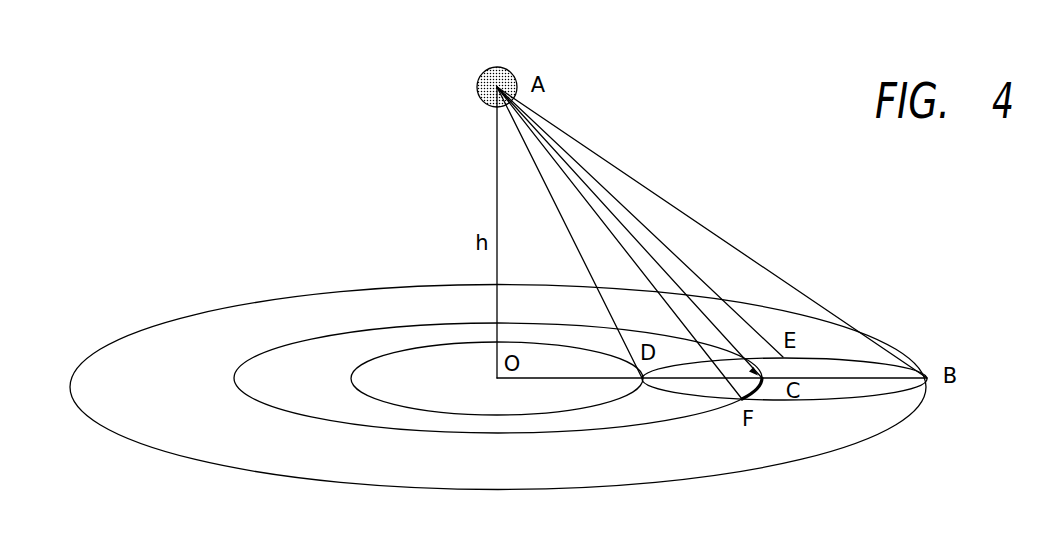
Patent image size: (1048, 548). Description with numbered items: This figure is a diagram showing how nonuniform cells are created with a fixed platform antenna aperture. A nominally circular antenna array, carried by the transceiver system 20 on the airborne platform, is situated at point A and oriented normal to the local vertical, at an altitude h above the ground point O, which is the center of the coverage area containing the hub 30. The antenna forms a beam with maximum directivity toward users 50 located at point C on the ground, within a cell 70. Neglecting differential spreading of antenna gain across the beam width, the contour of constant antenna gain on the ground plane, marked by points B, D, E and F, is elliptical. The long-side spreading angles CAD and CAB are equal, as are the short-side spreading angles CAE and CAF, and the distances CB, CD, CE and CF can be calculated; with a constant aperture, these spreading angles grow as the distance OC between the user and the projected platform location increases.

The transceiver system 20 is at (478, 83).
The hub 30 is at (493, 378).
The users 50 is at (781, 378).
The cell 70 is at (868, 398).